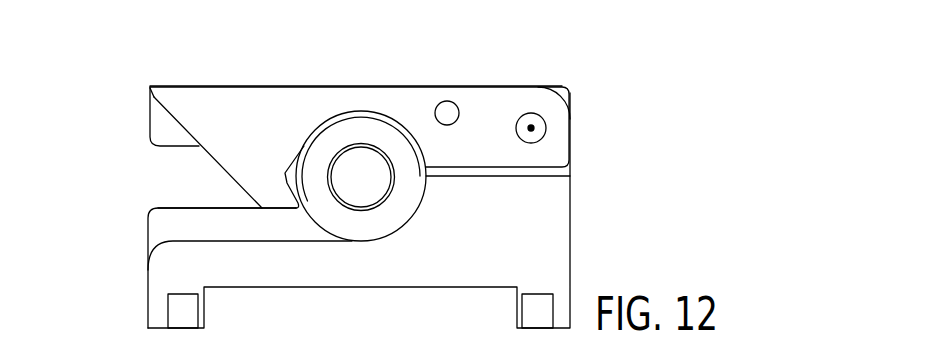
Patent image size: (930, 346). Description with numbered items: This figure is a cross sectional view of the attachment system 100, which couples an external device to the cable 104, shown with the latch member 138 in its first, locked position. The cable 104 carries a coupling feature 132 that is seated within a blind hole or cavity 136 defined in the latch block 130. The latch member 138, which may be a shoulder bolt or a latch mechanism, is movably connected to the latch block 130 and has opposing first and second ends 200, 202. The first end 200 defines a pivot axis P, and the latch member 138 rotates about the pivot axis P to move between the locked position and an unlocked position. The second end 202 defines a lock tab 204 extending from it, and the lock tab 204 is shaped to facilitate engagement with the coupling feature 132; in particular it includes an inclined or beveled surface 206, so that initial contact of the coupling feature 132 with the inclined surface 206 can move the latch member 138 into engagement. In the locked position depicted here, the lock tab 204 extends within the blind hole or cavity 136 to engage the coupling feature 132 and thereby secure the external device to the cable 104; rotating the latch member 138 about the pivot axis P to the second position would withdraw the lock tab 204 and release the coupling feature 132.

The attachment system 100 is at (665, 108).
The cable 104 is at (360, 180).
The latch block 130 is at (557, 211).
The coupling feature 132 is at (403, 198).
The blind hole or cavity 136 is at (135, 168).
The latch member 138 is at (347, 95).
The first end 200 is at (494, 98).
The second end 202 is at (187, 100).
The lock tab 204 is at (260, 190).
The inclined surface 206 is at (215, 165).
The pivot axis P is at (531, 128).